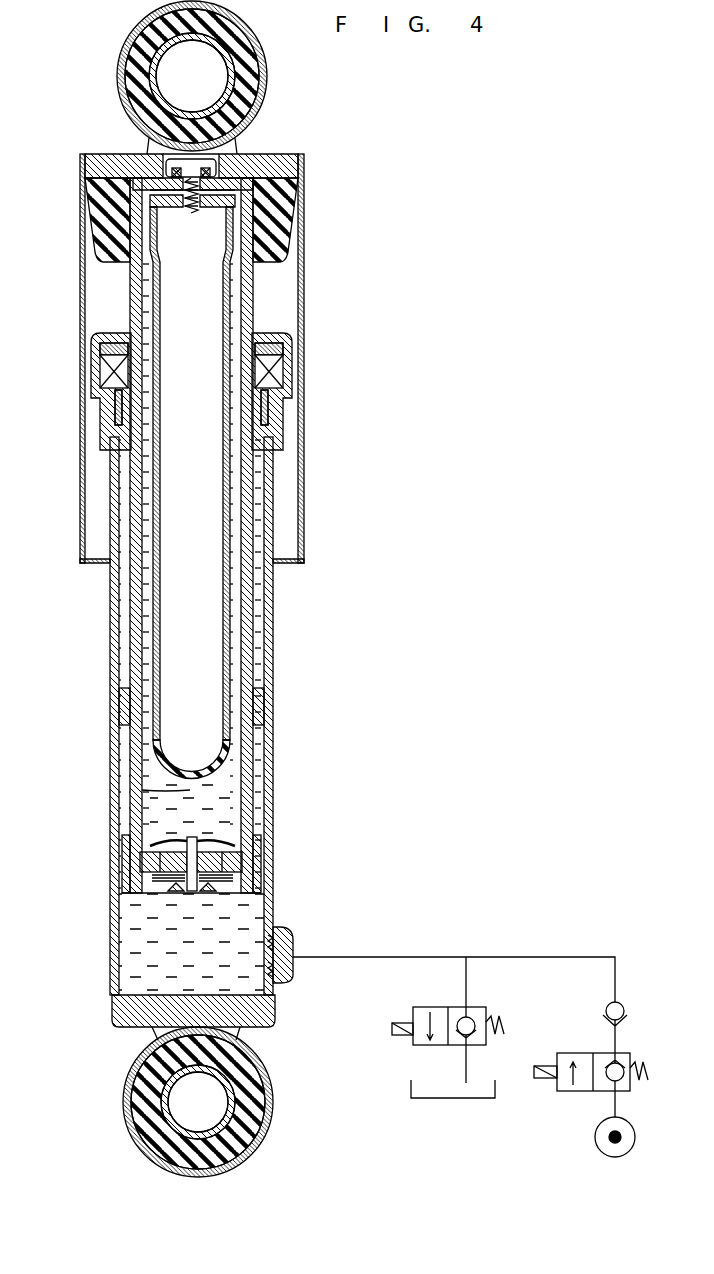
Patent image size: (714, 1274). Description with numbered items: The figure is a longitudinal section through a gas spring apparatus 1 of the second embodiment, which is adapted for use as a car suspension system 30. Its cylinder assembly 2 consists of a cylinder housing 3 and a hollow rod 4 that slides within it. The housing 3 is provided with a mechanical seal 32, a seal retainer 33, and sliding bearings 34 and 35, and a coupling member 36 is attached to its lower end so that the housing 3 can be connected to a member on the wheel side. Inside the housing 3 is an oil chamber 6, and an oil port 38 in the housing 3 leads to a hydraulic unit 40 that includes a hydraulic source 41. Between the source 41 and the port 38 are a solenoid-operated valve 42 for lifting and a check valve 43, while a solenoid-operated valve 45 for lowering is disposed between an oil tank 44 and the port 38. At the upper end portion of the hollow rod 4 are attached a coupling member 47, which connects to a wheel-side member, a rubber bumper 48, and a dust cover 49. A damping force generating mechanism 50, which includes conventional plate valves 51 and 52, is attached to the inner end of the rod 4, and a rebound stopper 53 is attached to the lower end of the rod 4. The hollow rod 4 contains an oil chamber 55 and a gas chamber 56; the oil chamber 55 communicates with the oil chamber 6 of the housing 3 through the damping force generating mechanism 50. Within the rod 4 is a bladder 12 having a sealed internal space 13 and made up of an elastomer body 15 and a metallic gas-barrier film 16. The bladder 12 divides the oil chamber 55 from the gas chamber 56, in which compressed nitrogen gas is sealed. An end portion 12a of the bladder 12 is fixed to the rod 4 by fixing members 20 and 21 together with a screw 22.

The gas spring apparatus 1 is at (290, 620).
The cylinder assembly 2 is at (100, 578).
The cylinder housing 3 is at (115, 525).
The hollow rod 4 is at (133, 304).
The oil chamber 6 is at (135, 955).
The bladder 12 is at (160, 480).
The end portion 12a is at (305, 190).
The sealed internal space 13 is at (212, 737).
The elastomer body 15 is at (160, 525).
The metallic gas-barrier film 16 is at (160, 625).
The fixing member 20 is at (112, 163).
The fixing member 21 is at (212, 214).
The screw 22 is at (215, 167).
The car suspension system 30 is at (330, 150).
The mechanical seal 32 is at (105, 375).
The seal retainer 33 is at (100, 348).
The sliding bearing 34 is at (122, 425).
The sliding bearing 35 is at (118, 712).
The coupling member 36 is at (115, 1097).
The oil port 38 is at (292, 955).
The hydraulic unit 40 is at (588, 950).
The hydraulic source 41 is at (596, 1142).
The solenoid-operated valve for lifting 42 is at (636, 1053).
The check valve 43 is at (625, 1003).
The oil tank 44 is at (402, 1087).
The solenoid-operated valve for lowering 45 is at (395, 1037).
The coupling member 47 is at (122, 38).
The rubber bumper 48 is at (103, 240).
The dust cover 49 is at (82, 470).
The damping force generating mechanism 50 is at (190, 833).
The plate valve 51 is at (150, 840).
The plate valve 52 is at (157, 887).
The rebound stopper 53 is at (258, 848).
The oil chamber 55 is at (148, 778).
The gas chamber 56 is at (187, 650).